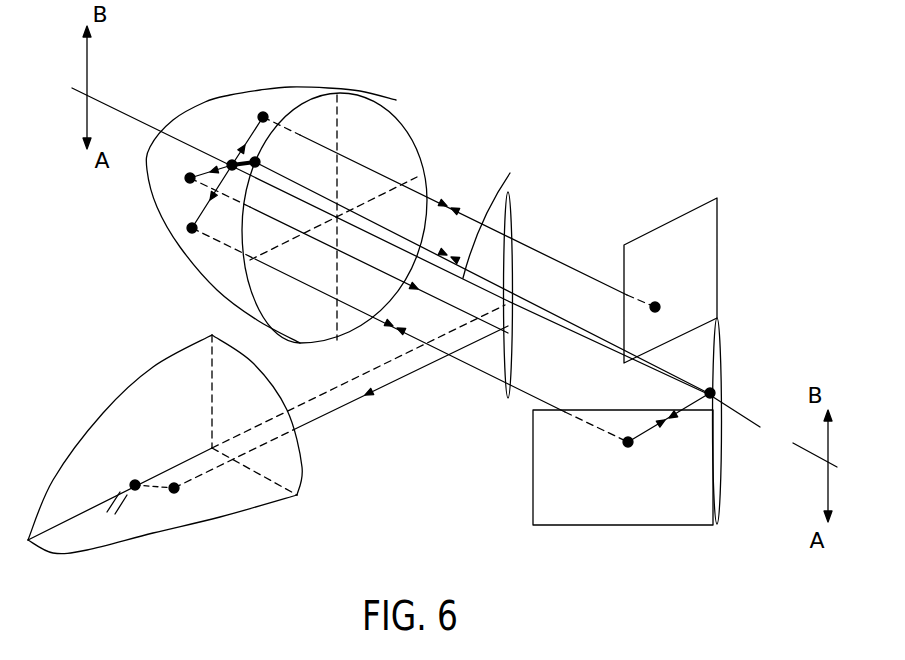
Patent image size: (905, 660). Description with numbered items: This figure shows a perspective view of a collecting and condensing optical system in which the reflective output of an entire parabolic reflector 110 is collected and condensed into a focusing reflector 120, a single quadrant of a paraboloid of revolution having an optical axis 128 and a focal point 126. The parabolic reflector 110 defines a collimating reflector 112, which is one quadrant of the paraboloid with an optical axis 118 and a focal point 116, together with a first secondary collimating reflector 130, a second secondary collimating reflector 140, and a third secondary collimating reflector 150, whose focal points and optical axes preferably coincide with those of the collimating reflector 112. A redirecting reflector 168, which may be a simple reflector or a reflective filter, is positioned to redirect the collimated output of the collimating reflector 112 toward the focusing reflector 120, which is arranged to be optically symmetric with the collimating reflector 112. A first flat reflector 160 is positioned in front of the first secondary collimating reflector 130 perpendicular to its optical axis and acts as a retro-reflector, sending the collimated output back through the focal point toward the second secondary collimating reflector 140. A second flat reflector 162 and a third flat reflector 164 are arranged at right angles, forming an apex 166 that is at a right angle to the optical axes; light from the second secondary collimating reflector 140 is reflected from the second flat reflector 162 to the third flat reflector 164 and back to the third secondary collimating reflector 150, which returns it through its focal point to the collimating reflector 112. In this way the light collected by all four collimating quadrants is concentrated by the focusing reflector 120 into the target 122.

The parabolic reflector 110 is at (329, 84).
The first secondary collimating reflector 130 is at (385, 93).
The second secondary collimating reflector 140 is at (257, 320).
The collimating reflector 112 is at (205, 207).
The focal point 116 is at (228, 158).
The optical axis 118 is at (512, 209).
The third secondary collimating reflector 150 is at (373, 302).
The redirecting reflector 168 is at (513, 214).
The first flat reflector 160 is at (670, 222).
The second flat reflector 162 is at (628, 526).
The third flat reflector 164 is at (720, 482).
The apex 166 is at (716, 527).
The focusing reflector 120 is at (190, 520).
The target 122 is at (116, 500).
The focal point 126 is at (180, 490).
The optical axis 128 is at (232, 436).